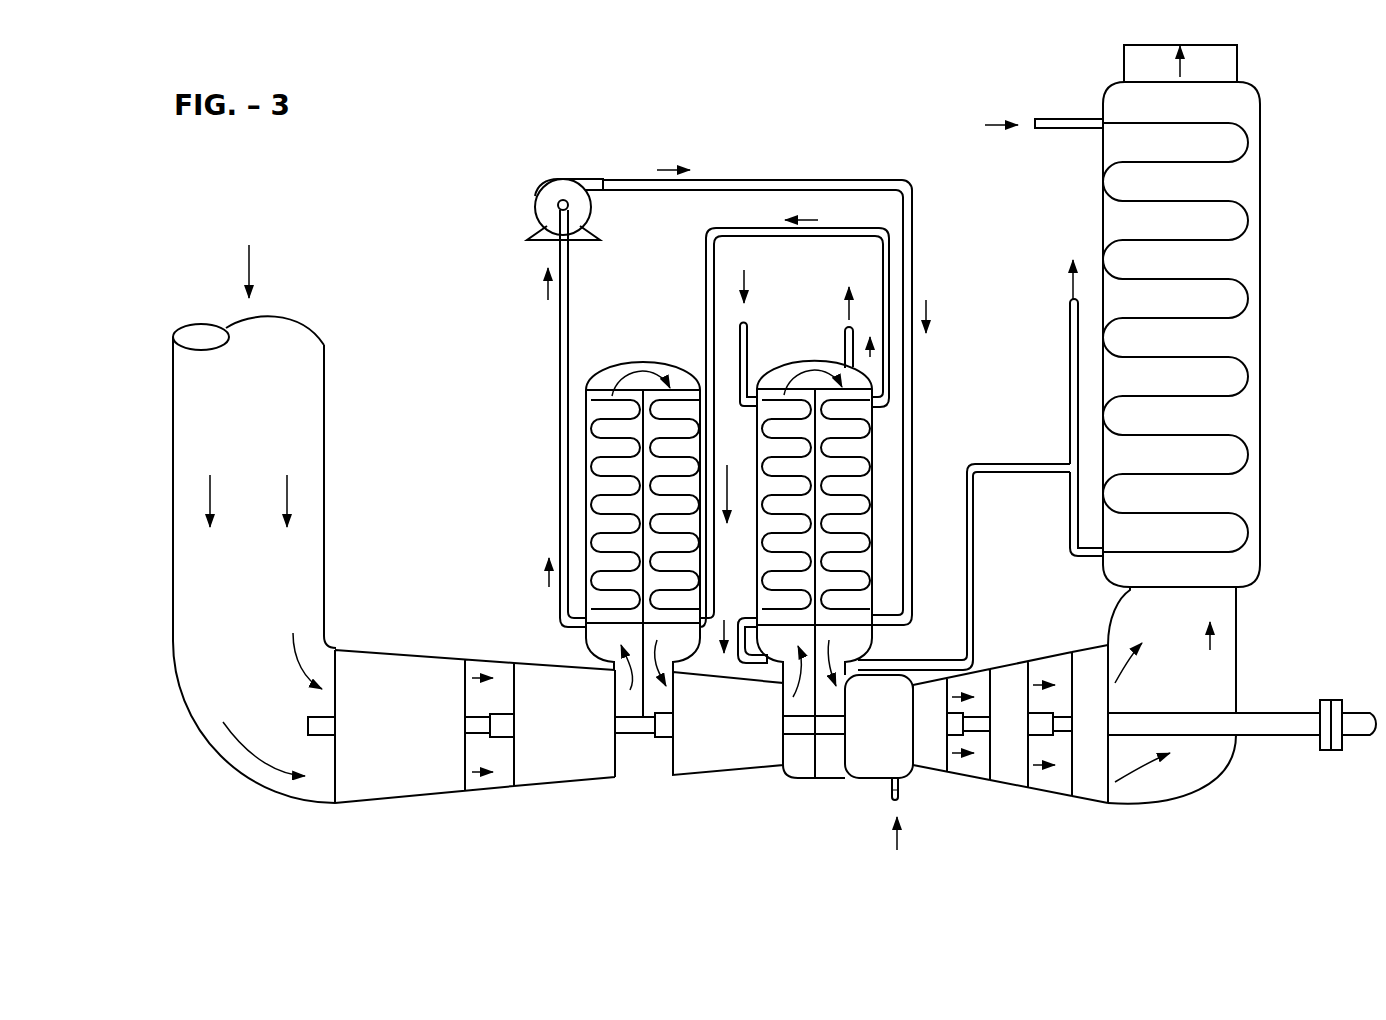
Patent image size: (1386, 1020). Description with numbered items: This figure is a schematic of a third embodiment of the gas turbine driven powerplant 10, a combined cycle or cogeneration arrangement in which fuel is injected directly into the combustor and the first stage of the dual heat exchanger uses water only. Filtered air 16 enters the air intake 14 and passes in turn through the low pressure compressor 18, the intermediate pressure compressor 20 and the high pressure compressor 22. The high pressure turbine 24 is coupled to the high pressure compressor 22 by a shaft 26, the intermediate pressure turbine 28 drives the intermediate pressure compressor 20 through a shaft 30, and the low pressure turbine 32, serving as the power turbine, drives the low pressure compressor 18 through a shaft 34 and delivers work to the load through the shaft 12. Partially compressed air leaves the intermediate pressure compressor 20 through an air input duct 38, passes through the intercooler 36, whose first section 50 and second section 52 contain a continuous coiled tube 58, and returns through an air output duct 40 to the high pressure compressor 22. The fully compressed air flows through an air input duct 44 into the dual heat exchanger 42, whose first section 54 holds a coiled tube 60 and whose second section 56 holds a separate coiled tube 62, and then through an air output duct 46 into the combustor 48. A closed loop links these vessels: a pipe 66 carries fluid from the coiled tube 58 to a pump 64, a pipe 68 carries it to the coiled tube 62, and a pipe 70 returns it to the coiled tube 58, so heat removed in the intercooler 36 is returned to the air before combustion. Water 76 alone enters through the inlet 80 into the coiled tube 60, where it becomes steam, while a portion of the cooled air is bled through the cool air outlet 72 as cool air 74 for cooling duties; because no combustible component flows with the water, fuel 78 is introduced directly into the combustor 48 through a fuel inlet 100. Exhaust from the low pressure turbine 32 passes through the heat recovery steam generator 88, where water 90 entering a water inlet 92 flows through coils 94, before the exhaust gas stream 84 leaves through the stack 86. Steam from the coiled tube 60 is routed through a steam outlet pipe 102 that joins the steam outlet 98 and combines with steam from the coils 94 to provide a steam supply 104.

The gas turbine driven powerplant 10 is at (463, 116).
The shaft 12 is at (1263, 712).
The air intake 14 is at (326, 400).
The filtered air 16 is at (247, 253).
The low pressure compressor 18 is at (402, 790).
The intermediate pressure compressor 20 is at (570, 780).
The high pressure compressor 22 is at (712, 773).
The high pressure turbine 24 is at (926, 688).
The shaft 26 is at (660, 740).
The intermediate pressure turbine 28 is at (1010, 672).
The shaft 30 is at (490, 735).
The low pressure turbine 32 is at (1098, 648).
The shaft 34 is at (302, 730).
The intercooler 36 is at (660, 362).
The air input duct 38 is at (616, 697).
The air output duct 40 is at (680, 712).
The dual heat exchanger 42 is at (770, 368).
The air input duct 44 is at (785, 725).
The air output duct 46 is at (850, 708).
The combustor 48 is at (905, 780).
The first section 50 is at (598, 520).
The second section 52 is at (652, 487).
The first section 54 is at (762, 537).
The second section 56 is at (866, 556).
The continuous coiled tube 58 is at (600, 424).
The coiled tube 60 is at (737, 478).
The coiled tube 62 is at (858, 465).
The pump 64 is at (540, 210).
The pipe 66 is at (558, 330).
The pipe 68 is at (905, 184).
The pipe 70 is at (708, 268).
The cool air outlet 72 is at (855, 330).
The cool air 74 is at (852, 308).
The water 76 is at (744, 273).
The fuel 78 is at (897, 847).
The inlet 80 is at (748, 322).
The exhaust gas stream 84 is at (1180, 42).
The stack 86 is at (1230, 60).
The heat recovery steam generator 88 is at (1263, 404).
The water 90 is at (984, 126).
The water inlet 92 is at (1062, 118).
The coils 94 is at (1250, 176).
The steam outlet 98 is at (1070, 548).
The fuel inlet 100 is at (888, 790).
The steam outlet pipe 102 is at (974, 518).
The steam supply 104 is at (1073, 258).